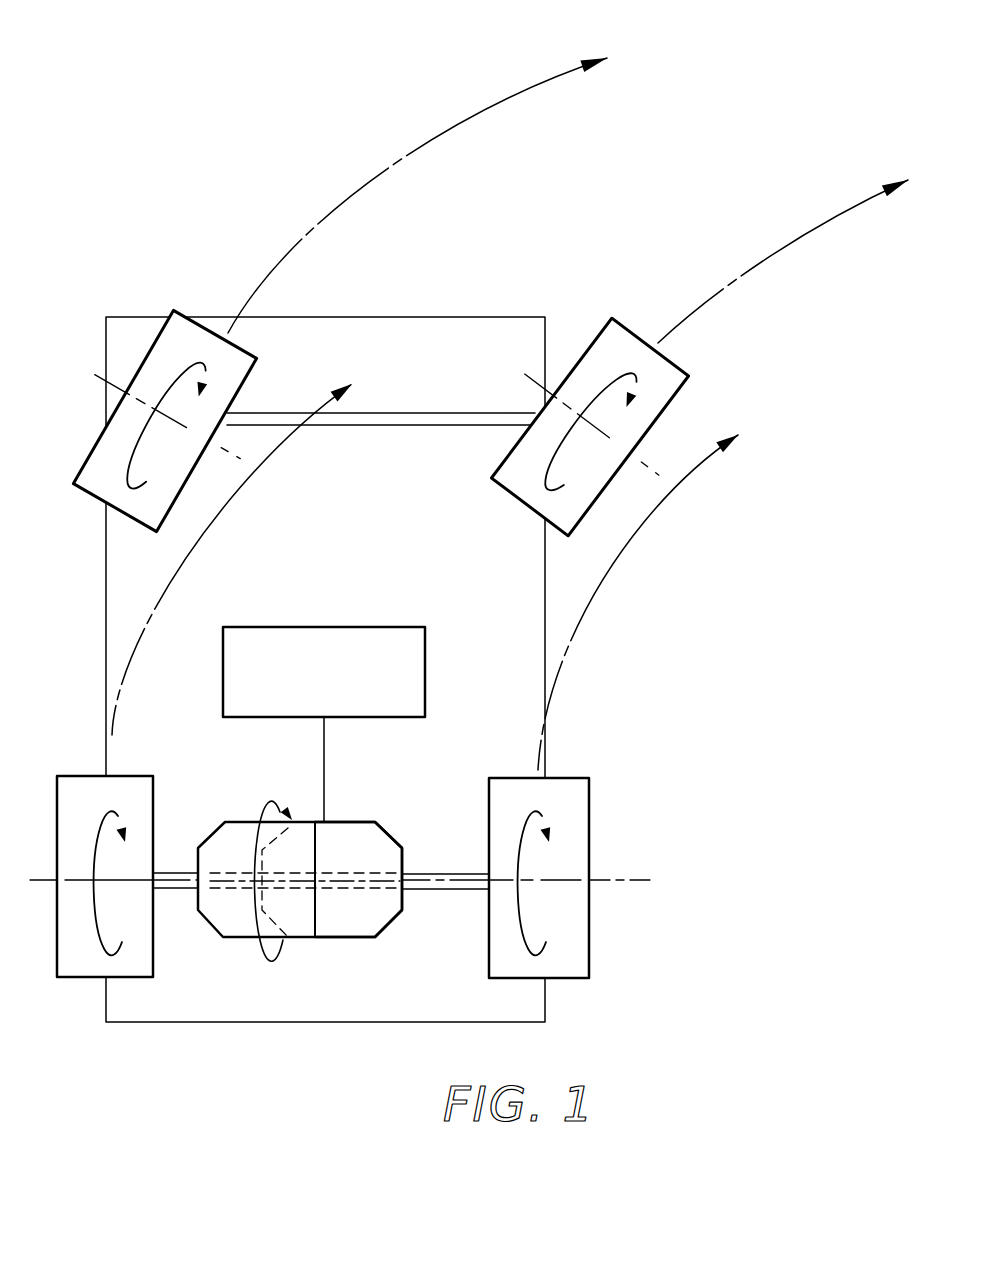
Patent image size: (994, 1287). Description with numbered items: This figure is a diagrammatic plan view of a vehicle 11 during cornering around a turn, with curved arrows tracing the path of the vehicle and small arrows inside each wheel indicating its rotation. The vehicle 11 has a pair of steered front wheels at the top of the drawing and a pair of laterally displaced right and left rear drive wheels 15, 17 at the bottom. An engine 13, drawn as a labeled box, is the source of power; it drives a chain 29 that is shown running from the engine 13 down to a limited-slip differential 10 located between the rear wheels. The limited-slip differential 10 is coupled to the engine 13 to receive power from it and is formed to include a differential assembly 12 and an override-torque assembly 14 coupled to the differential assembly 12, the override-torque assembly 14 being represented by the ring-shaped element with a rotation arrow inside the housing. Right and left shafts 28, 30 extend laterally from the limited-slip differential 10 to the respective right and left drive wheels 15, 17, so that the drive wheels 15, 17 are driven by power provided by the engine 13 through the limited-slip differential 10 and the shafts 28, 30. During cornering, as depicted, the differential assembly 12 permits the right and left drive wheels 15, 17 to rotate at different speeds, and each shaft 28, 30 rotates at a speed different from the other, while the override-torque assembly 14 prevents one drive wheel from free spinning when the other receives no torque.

The limited-slip differential 10 is at (393, 827).
The vehicle 11 is at (673, 667).
The differential assembly 12 is at (352, 945).
The engine 13 is at (332, 622).
The override-torque assembly 14 is at (248, 943).
The right drive wheel 15 is at (573, 772).
The left drive wheel 17 is at (93, 772).
The right shaft 28 is at (418, 868).
The chain 29 is at (324, 758).
The left shaft 30 is at (173, 867).